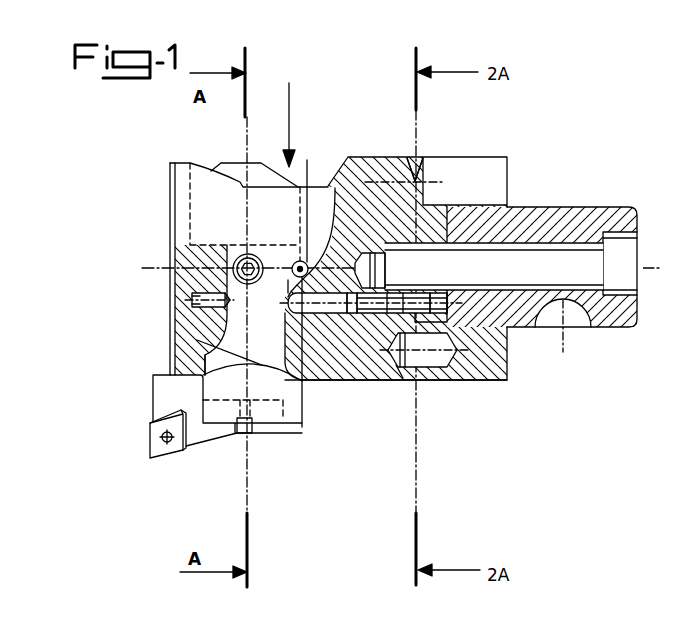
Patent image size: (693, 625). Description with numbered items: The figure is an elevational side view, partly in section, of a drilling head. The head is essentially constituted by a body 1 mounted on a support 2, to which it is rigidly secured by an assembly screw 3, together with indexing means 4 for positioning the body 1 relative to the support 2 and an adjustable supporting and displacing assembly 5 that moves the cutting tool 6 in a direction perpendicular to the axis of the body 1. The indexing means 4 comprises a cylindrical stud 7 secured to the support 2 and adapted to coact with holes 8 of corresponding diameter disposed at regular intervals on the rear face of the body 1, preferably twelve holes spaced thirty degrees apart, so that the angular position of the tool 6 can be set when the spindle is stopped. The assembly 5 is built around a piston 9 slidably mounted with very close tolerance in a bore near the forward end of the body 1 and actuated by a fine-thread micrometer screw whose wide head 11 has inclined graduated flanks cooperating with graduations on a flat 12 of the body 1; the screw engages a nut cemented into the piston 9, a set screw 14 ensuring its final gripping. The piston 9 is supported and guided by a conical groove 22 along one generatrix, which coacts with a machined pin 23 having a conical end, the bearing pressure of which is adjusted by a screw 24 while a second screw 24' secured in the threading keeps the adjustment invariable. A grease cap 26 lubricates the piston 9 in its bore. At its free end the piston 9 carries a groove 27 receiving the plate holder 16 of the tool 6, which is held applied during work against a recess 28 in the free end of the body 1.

The body 1 is at (378, 170).
The support 2 is at (553, 220).
The assembly screw 3 is at (573, 260).
The indexing means 4 is at (470, 387).
The adjustable supporting and displacing assembly 5 is at (289, 117).
The cutting tool 6 is at (150, 440).
The cylindrical stud 7 is at (435, 357).
The holes 8 is at (435, 183).
The piston 9 is at (287, 385).
The wide head 11 is at (230, 168).
The flat 12 is at (318, 184).
The set screw 14 is at (197, 299).
The plate holder 16 is at (212, 437).
The conical groove 22 is at (293, 332).
The machined pin 23 is at (333, 313).
The screw 24 is at (371, 379).
The second screw 24' is at (508, 334).
The grease cap 26 is at (305, 206).
The groove 27 is at (283, 433).
The recess 28 is at (222, 352).